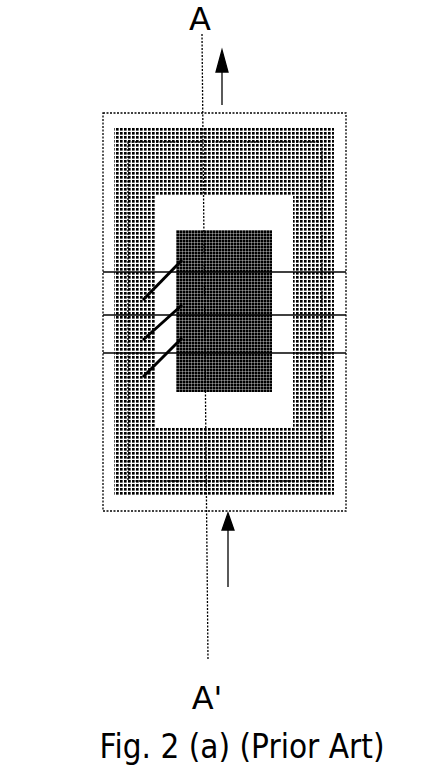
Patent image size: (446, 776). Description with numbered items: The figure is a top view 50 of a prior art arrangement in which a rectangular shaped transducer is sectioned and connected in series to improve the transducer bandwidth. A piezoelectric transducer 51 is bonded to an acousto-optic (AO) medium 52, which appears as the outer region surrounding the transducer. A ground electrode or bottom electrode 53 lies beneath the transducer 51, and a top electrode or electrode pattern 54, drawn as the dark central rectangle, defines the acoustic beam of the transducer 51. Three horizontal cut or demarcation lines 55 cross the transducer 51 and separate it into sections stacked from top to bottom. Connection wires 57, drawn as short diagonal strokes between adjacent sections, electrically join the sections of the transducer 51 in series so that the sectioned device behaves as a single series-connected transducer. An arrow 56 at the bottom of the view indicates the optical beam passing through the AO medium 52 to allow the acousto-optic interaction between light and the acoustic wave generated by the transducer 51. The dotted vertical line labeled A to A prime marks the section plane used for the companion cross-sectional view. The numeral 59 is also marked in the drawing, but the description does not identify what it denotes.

The top view 50 is at (343, 82).
The piezoelectric transducer 51 is at (150, 130).
The acousto-optic medium 52 is at (346, 173).
The ground electrode 53 is at (290, 463).
The top electrode 54 is at (272, 240).
The cut lines 55 is at (347, 352).
The arrow 56 is at (248, 562).
The connection wire 57 is at (262, 172).
The opening 59 is at (263, 413).